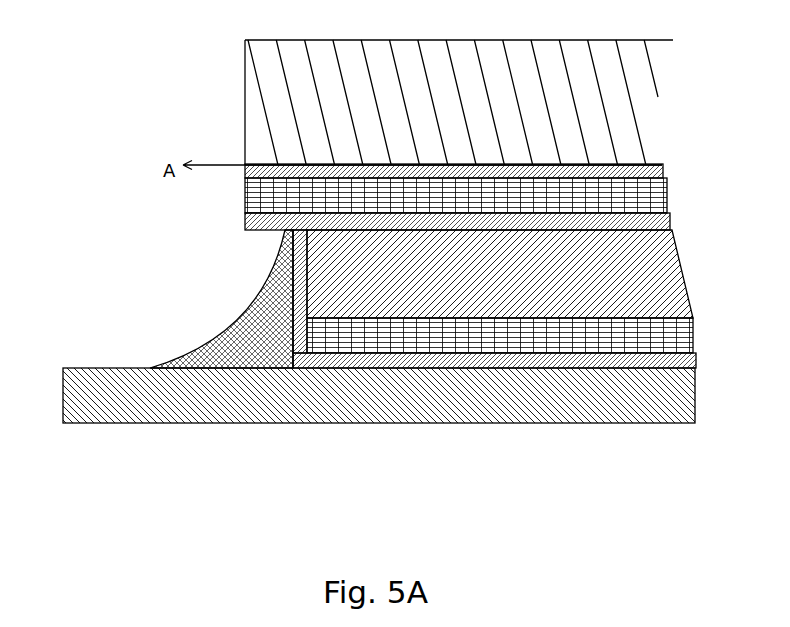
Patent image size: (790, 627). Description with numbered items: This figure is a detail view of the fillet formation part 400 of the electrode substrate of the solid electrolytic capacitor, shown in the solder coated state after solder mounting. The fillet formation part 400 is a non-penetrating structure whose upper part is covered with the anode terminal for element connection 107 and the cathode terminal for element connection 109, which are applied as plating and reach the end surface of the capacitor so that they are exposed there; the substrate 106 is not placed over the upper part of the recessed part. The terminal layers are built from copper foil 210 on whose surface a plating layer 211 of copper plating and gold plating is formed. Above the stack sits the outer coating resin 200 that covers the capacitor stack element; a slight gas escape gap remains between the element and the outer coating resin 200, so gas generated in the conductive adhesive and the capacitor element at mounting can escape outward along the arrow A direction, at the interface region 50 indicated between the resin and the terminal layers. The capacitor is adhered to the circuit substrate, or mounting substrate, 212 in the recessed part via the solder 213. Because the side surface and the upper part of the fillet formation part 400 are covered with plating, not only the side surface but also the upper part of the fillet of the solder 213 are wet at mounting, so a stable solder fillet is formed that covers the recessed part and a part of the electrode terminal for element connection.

The outer coating resin 200 is at (272, 98).
The interface region 50 is at (245, 165).
The anode terminal for element connection 107 is at (110, 172).
The cathode terminal for element connection 109 is at (365, 347).
The plating layer 211 is at (245, 170).
The copper foil 210 is at (245, 199).
The substrate 106 is at (592, 277).
The circuit substrate (mounting substrate) 212 is at (282, 397).
The solder 213 is at (222, 350).
The fillet formation part 400 is at (219, 306).